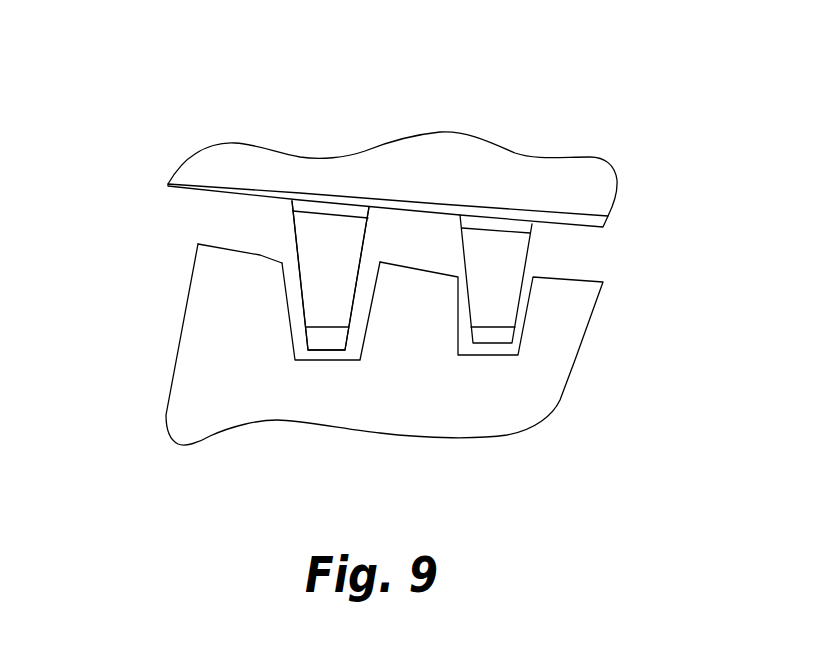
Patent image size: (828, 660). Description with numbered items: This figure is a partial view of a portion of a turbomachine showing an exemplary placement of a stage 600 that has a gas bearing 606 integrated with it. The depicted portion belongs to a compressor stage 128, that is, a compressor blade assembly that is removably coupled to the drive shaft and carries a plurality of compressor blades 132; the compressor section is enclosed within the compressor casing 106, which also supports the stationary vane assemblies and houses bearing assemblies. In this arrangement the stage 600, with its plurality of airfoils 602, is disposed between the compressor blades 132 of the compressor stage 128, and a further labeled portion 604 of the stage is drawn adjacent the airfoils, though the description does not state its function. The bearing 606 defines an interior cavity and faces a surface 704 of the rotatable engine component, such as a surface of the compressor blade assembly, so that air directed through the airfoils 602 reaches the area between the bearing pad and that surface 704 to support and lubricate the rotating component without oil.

The compressor casing 106 is at (200, 180).
The compressor blade assembly 128 is at (289, 440).
The compressor blades 132 is at (218, 245).
The stage 600 is at (279, 209).
The airfoils 602 is at (358, 275).
The neck portion 604 is at (368, 222).
The bearing 606 is at (307, 337).
The surface of a rotatable engine component 704 is at (338, 361).